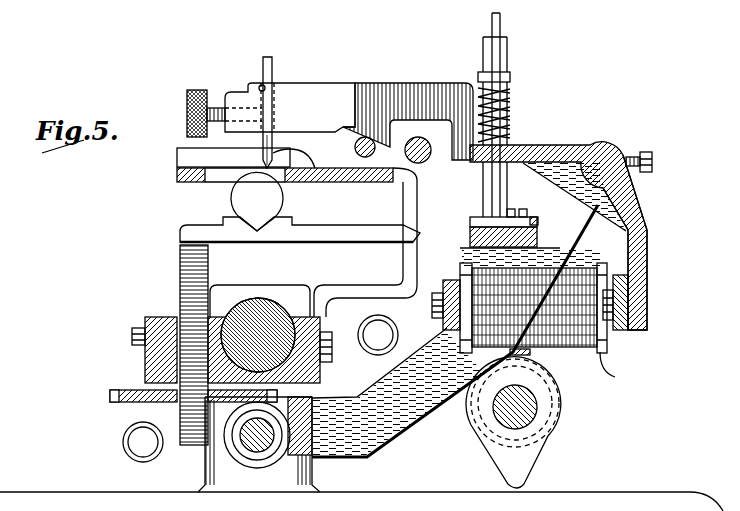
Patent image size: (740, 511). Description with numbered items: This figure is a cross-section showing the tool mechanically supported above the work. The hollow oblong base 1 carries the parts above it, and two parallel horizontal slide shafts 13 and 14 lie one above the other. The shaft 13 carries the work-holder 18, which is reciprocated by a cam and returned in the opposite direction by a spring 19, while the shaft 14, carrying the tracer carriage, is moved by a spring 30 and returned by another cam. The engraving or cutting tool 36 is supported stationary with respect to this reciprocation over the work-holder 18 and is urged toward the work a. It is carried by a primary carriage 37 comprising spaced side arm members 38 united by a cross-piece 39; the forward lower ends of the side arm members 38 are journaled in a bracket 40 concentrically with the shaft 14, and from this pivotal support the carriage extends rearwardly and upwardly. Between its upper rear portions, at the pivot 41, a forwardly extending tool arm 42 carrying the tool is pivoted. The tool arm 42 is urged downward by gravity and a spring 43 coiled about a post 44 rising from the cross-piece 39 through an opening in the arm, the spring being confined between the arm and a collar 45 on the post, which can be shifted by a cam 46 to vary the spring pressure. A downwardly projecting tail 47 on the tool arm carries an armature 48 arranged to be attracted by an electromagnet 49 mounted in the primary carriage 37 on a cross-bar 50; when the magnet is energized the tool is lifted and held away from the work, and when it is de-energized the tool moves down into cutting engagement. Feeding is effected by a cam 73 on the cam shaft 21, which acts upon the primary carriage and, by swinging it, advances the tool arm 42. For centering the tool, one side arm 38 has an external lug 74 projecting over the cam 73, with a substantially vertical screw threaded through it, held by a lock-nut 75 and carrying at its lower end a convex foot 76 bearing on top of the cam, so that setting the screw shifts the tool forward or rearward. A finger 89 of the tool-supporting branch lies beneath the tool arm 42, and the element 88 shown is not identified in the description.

The base 1 is at (707, 490).
The slide shaft 13 is at (233, 332).
The slide shaft 14 is at (250, 445).
The work-holder 18 is at (140, 368).
The spring 19 is at (123, 443).
The cam shaft 21 is at (533, 418).
The spring 30 is at (370, 355).
The engraving or cutting tool 36 is at (277, 138).
The primary carriage 37 is at (397, 443).
The side arm members 38 is at (417, 410).
The cross-piece 39 is at (470, 232).
The bracket 40 is at (210, 465).
The pivot 41 is at (612, 142).
The tool arm 42 is at (310, 82).
The spring 43 is at (508, 100).
The post 44 is at (507, 50).
The collar 45 is at (480, 75).
The cam 46 is at (490, 50).
The tail 47 is at (647, 245).
The armature 48 is at (623, 332).
The electromagnet 49 is at (621, 371).
The cross-bar 50 is at (443, 320).
The cam 73 is at (535, 467).
The lug 74 is at (462, 255).
The lock-nut 75 is at (536, 221).
The convex foot 76 is at (532, 355).
The pin 88 is at (426, 160).
The finger 89 is at (368, 158).
The work a is at (230, 198).